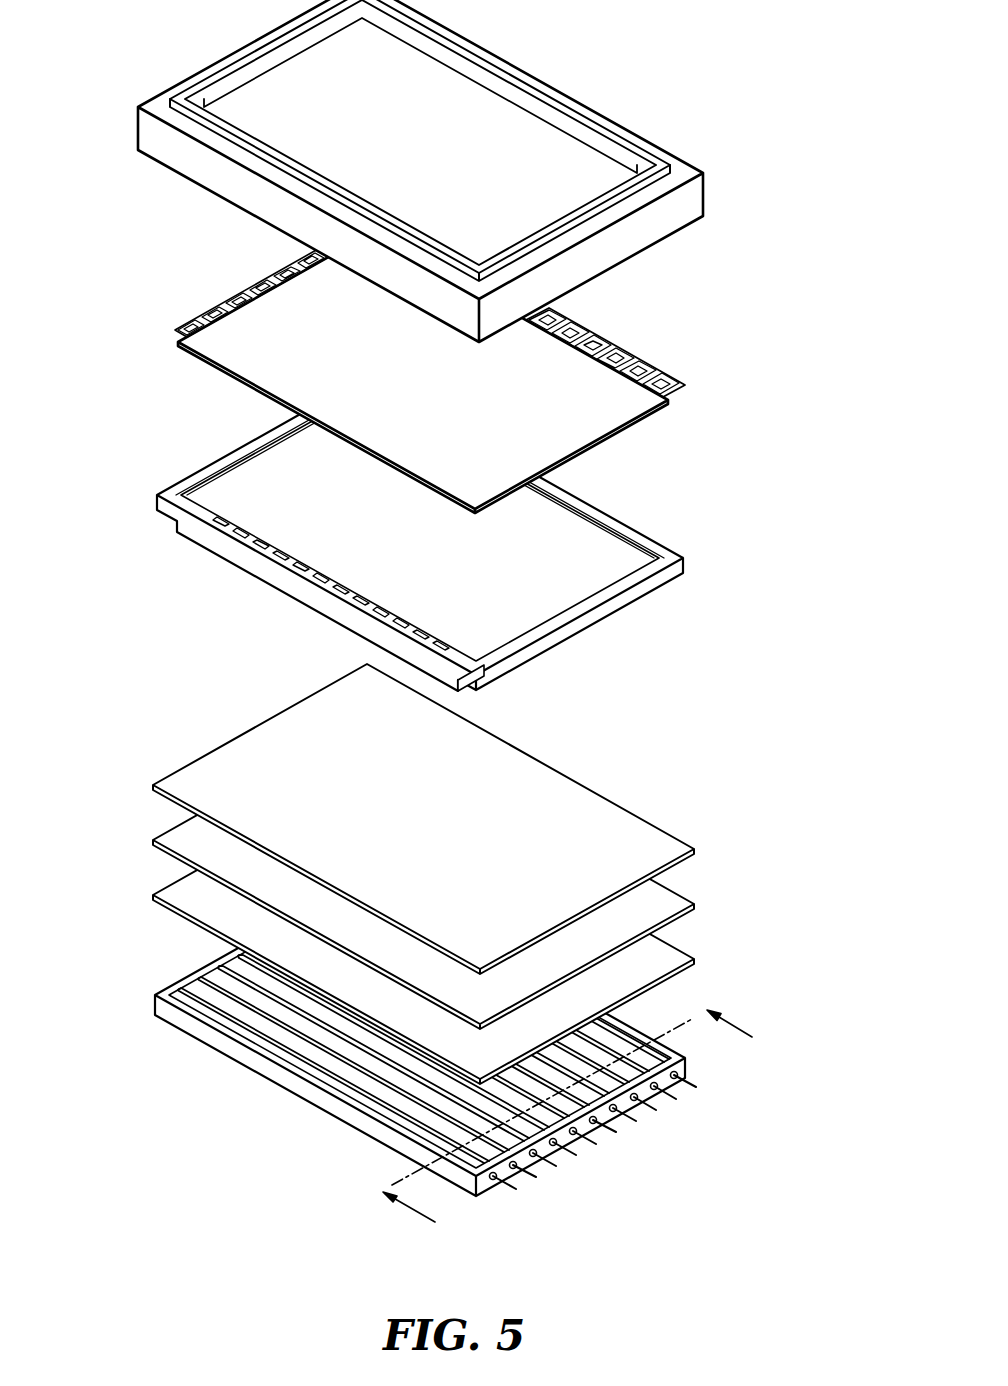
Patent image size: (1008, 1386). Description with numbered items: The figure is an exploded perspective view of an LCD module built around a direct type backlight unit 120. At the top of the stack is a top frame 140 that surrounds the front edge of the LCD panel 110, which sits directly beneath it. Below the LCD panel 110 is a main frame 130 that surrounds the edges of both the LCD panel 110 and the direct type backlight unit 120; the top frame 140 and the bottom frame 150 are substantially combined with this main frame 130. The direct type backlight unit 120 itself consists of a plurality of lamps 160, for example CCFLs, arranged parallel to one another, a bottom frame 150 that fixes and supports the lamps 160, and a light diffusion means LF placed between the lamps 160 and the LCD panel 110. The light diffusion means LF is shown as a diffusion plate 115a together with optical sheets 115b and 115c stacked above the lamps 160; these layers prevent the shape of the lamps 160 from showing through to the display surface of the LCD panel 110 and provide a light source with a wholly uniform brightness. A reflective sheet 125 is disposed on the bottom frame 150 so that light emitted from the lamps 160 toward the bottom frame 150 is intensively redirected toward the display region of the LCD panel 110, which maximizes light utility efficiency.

The LCD panel 110 is at (657, 425).
The diffusion plate 115a is at (694, 957).
The optical sheet 115b is at (694, 902).
The optical sheet 115c is at (694, 847).
The light diffusion means LF is at (513, 874).
The direct type backlight unit 120 is at (460, 958).
The reflective sheet 125 is at (227, 1013).
The main frame 130 is at (683, 556).
The top frame 140 is at (705, 192).
The bottom frame 150 is at (292, 1083).
The lamps 160 is at (280, 1033).